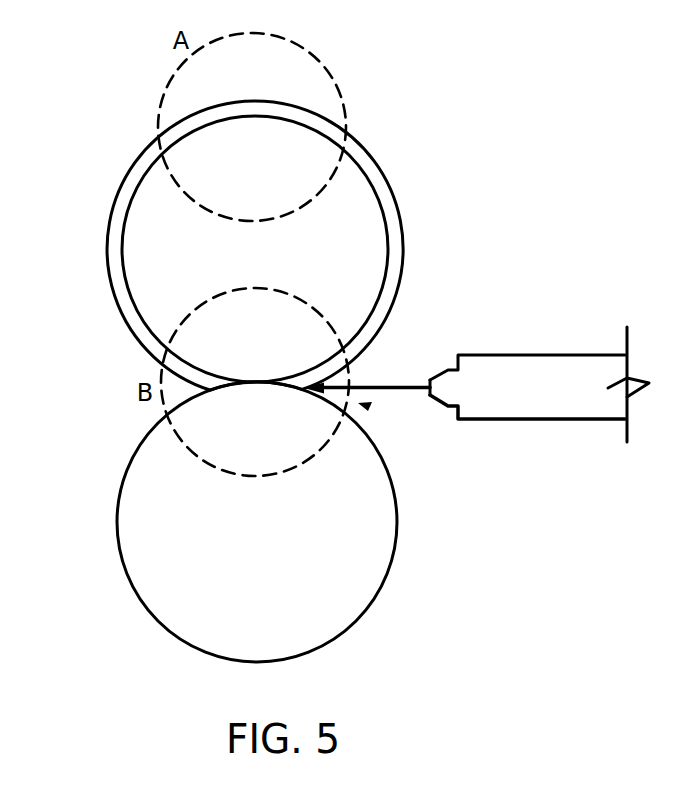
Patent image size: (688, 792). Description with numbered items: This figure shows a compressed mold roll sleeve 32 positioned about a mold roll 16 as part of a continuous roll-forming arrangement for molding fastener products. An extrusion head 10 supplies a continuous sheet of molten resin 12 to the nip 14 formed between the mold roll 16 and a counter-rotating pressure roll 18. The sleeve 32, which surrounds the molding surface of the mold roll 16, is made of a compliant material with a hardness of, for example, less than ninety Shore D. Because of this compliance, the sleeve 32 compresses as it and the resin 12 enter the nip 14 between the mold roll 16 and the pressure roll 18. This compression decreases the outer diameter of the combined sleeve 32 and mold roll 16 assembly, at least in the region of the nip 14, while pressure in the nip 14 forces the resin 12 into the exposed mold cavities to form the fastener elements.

The extrusion head 10 is at (537, 377).
The molten resin 12 is at (390, 387).
The nip 14 is at (366, 406).
The mold roll 16 is at (155, 252).
The pressure roll 18 is at (157, 517).
The mold roll sleeve 32 is at (373, 177).